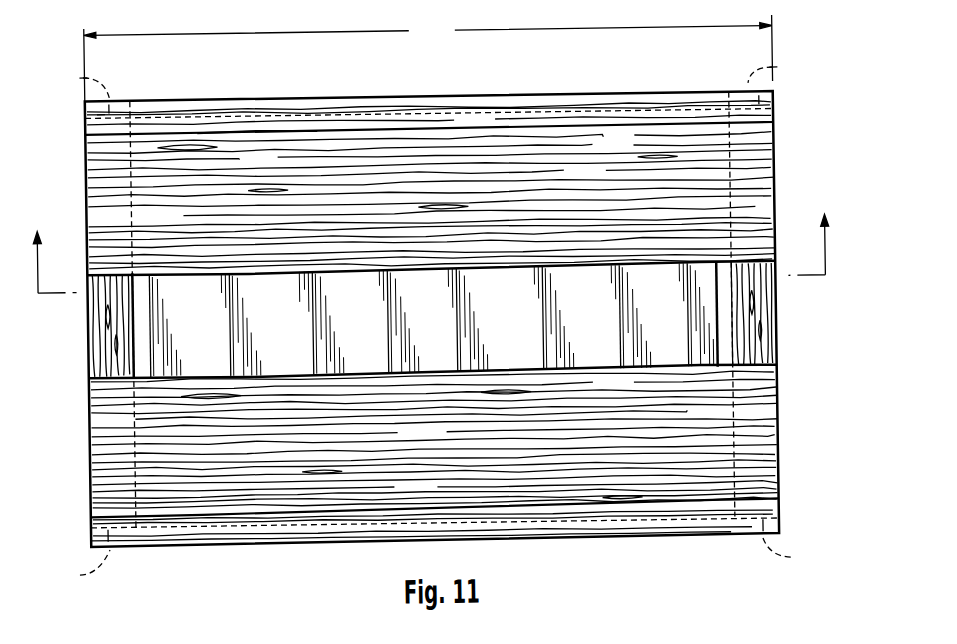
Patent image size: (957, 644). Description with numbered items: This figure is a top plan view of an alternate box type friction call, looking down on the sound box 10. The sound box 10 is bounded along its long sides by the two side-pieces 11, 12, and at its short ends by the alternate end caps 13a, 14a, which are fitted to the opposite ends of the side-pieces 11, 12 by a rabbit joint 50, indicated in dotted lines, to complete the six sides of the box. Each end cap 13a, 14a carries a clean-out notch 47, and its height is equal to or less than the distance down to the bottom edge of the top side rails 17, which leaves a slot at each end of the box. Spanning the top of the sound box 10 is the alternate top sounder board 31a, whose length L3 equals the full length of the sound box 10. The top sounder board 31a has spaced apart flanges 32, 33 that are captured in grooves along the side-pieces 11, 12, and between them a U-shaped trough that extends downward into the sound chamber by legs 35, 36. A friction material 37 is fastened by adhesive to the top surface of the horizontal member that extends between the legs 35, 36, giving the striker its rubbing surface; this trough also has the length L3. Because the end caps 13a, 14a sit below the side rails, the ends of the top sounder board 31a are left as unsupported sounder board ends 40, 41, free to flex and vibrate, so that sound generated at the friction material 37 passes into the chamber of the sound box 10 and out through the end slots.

The sound box 10 is at (527, 552).
The side-piece 11 is at (269, 538).
The side-piece 12 is at (240, 97).
The end cap 13a is at (88, 442).
The end cap 14a is at (781, 422).
The top side rail 17 is at (378, 102).
The top sounder board 31a is at (475, 174).
The flange 32 is at (624, 168).
The flange 33 is at (668, 466).
The leg 35 is at (599, 366).
The leg 36 is at (483, 273).
The friction material 37 is at (341, 329).
The unsupported sounder board end 40 is at (779, 392).
The unsupported sounder board end 41 is at (89, 413).
The clean-out notch 47 is at (100, 350).
The rabbit joint 50 is at (436, 320).
The length L3 is at (428, 58).